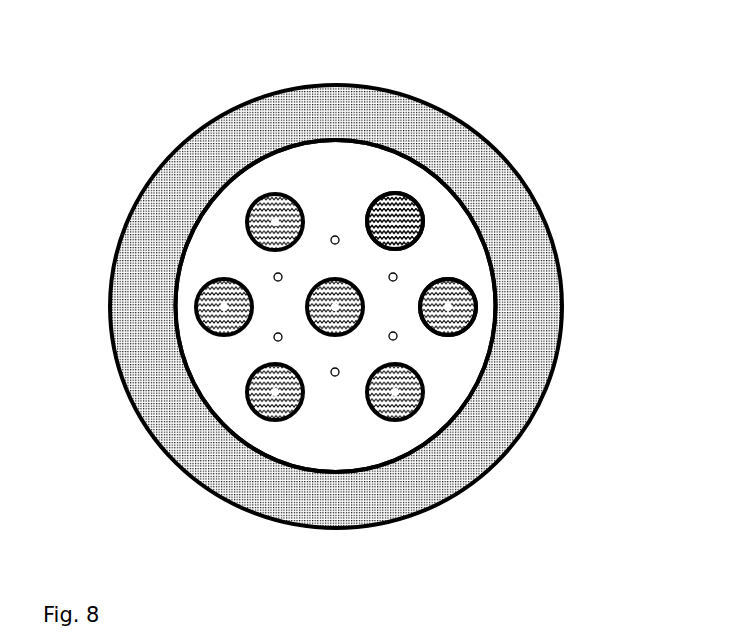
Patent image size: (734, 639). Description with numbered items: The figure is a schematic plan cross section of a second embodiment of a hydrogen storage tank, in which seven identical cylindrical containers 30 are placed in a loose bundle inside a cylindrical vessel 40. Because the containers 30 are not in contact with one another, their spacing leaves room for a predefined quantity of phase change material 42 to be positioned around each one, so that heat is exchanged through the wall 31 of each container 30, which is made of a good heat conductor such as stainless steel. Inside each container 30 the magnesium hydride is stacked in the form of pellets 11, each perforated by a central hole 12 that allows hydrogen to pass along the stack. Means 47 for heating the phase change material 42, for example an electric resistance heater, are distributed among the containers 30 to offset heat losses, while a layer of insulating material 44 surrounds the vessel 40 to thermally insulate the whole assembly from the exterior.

The pellet 11 is at (232, 170).
The central hole 12 is at (421, 204).
The tubular container 30 is at (430, 234).
The container wall 31 is at (390, 192).
The vessel 40 is at (192, 217).
The phase change material 42 is at (456, 384).
The insulating material layer 44 is at (143, 255).
The heating means 47 is at (336, 236).